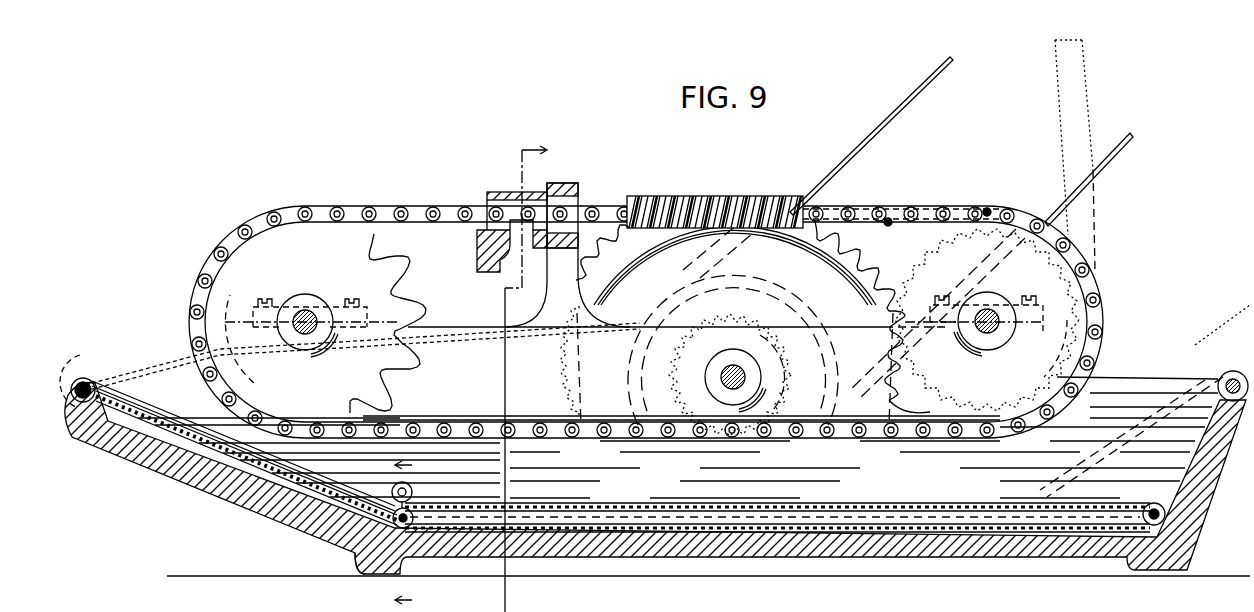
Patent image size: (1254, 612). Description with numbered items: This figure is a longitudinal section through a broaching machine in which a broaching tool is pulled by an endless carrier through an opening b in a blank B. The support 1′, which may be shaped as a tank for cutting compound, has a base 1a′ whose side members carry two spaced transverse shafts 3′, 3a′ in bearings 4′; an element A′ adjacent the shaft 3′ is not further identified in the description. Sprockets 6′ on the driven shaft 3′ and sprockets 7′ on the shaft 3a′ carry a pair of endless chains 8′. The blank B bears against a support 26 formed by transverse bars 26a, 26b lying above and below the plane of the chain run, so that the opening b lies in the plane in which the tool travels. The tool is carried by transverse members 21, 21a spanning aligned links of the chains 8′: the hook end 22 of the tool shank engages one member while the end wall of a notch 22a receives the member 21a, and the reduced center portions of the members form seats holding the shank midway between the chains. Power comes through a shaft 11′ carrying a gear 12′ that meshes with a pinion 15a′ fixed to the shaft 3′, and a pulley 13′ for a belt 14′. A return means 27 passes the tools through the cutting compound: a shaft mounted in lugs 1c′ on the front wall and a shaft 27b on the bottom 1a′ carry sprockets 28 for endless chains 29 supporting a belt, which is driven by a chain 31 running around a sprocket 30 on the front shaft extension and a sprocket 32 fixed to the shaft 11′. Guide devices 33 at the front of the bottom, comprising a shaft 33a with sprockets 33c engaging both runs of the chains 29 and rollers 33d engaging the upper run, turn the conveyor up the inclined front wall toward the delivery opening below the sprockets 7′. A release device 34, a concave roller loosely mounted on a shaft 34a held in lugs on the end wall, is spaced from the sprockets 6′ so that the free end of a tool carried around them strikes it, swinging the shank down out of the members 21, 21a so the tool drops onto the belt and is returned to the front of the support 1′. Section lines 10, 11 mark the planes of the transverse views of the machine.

The endless chains 8′ is at (405, 208).
The sprockets 7′ is at (408, 292).
The transverse shaft 3a′ is at (312, 312).
The bearings 4′ is at (300, 298).
The opening b is at (492, 193).
The blank B is at (477, 256).
The blank support 26 is at (578, 196).
The transverse bar 26a is at (564, 184).
The transverse bar 26b is at (578, 242).
The section line 10 is at (526, 207).
The section line 11 is at (450, 450).
The sprockets 6′ is at (455, 325).
The gear 12′ is at (652, 272).
The pulley 13′ is at (728, 251).
The drive shaft 11′ is at (733, 365).
The sprocket 32 is at (717, 375).
The belt 14′ is at (880, 128).
The notch 22a is at (892, 218).
The pivot pin 22 is at (989, 207).
The transverse member 21a is at (884, 226).
The transverse member 21 is at (988, 240).
The pinion 15a′ is at (990, 300).
The bearing block A′ is at (1010, 296).
The driven transverse shaft 3′ is at (991, 335).
The support 1′ is at (300, 526).
The base 1a′ is at (708, 586).
The guide shaft 33a is at (356, 548).
The guide devices 33 is at (417, 492).
The rollers 33d is at (410, 486).
The guide sprockets 33c is at (405, 528).
The return means 27 is at (83, 378).
The sprockets 28 is at (96, 388).
The endless chains 29 is at (934, 508).
The shaft 27b is at (1156, 503).
The sprocket 30 is at (130, 355).
The chain 31 is at (150, 378).
The lugs 1c′ is at (66, 415).
The release device 34 is at (1219, 382).
The shaft 34a is at (1145, 401).